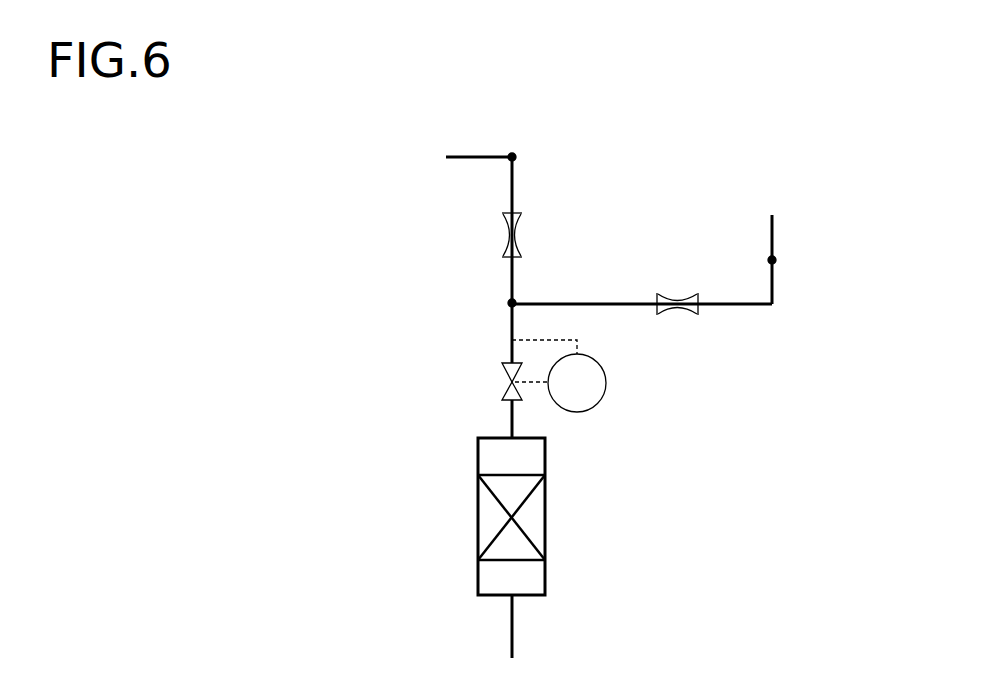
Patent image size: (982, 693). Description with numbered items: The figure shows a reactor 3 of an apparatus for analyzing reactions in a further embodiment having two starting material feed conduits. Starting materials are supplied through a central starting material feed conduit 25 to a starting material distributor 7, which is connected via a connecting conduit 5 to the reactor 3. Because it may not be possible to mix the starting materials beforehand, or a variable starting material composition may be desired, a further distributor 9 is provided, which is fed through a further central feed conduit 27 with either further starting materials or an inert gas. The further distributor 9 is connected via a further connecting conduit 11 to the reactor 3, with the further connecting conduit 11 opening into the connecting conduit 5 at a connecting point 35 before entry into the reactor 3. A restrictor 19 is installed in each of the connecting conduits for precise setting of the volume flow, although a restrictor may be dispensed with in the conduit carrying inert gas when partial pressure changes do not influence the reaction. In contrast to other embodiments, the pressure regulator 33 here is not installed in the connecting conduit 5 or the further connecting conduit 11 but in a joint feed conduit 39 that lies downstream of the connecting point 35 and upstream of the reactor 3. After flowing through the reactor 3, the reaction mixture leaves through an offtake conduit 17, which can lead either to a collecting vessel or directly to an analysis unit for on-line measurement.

The central starting material feed conduit 25 is at (470, 157).
The starting material distributor 7 is at (515, 153).
The connecting conduit 5 is at (515, 183).
The restrictor 19 is at (507, 235).
The connecting point 35 is at (505, 308).
The further connecting conduit 11 is at (633, 307).
The further distributor 9 is at (777, 262).
The further central feed conduit 27 is at (775, 225).
The joint feed conduit 39 is at (510, 325).
The pressure regulator 33 is at (507, 372).
The reactor 3 is at (548, 505).
The offtake conduit 17 is at (515, 633).